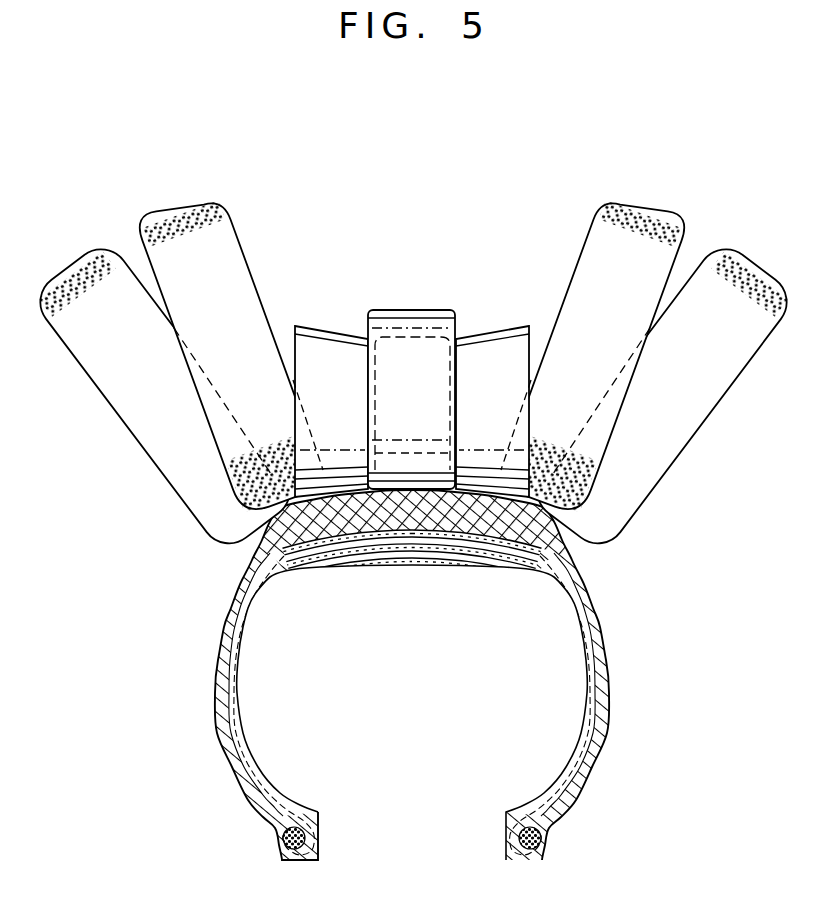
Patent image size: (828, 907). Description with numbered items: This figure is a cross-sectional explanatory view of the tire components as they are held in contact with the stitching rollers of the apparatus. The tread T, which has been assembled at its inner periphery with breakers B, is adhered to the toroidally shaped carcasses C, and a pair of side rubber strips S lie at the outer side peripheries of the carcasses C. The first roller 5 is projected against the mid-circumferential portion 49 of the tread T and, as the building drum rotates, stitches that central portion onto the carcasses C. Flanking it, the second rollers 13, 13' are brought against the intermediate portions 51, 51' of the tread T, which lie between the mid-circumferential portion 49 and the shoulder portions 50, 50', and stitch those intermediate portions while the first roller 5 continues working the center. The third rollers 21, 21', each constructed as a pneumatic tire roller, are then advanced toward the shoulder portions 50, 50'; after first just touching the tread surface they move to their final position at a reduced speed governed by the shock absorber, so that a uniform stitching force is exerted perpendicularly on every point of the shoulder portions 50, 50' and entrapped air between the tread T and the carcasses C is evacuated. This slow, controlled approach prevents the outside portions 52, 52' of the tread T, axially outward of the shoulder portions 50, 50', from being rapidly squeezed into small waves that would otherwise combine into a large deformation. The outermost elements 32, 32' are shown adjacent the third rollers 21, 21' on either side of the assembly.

The third roller 21 is at (230, 333).
The third roller 21' is at (593, 333).
The mold segment 32 is at (165, 382).
The mold segment 32' is at (662, 383).
The first roller 5 is at (411, 310).
The second roller 13 is at (330, 391).
The second roller 13' is at (493, 391).
The mid-circumferential portion 49 is at (411, 503).
The tread T is at (462, 513).
The breakers B is at (416, 547).
The intermediate portion 51 is at (347, 550).
The intermediate portion 51' is at (476, 556).
The shoulder portion 50 is at (351, 580).
The shoulder portion 50' is at (473, 580).
The outside portion 52 is at (247, 678).
The outside portion 52' is at (579, 680).
The carcasses C is at (577, 618).
The side rubber strips S is at (220, 740).